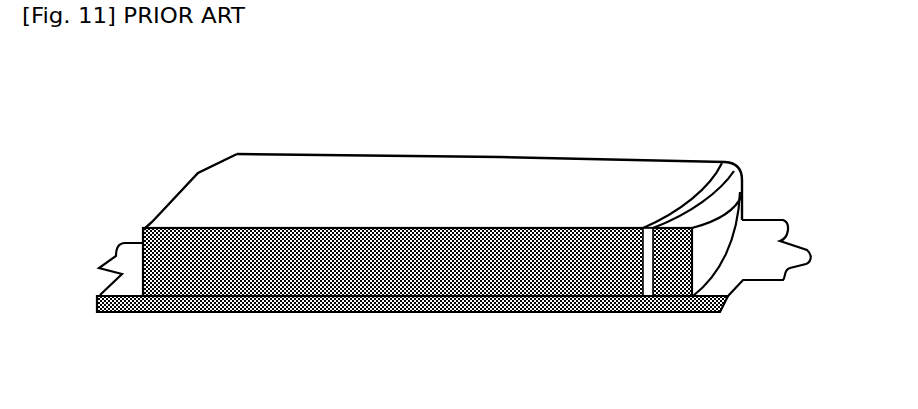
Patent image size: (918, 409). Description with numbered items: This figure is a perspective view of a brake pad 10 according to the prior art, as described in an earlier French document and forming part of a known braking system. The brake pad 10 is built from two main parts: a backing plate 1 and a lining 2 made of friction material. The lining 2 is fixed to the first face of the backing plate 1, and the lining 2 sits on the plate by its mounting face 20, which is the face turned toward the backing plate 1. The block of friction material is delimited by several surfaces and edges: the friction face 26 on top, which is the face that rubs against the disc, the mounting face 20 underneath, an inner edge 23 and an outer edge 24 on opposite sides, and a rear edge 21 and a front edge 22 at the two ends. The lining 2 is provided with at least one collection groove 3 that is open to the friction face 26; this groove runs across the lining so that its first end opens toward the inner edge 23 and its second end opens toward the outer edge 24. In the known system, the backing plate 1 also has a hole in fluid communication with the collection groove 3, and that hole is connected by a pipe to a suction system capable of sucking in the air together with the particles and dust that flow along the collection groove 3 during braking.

The brake pad 10 is at (165, 160).
The backing plate 1 is at (183, 303).
The lining 2 is at (442, 152).
The collection groove 3 is at (693, 187).
The mounting face 20 is at (468, 273).
The rear edge 21 is at (720, 230).
The front edge 22 is at (150, 220).
The inner edge 23 is at (390, 267).
The outer edge 24 is at (503, 158).
The friction face 26 is at (448, 177).